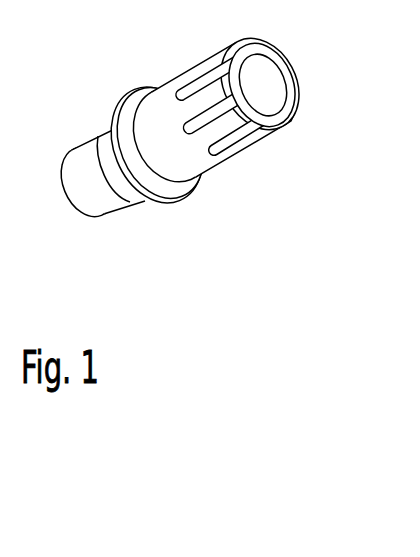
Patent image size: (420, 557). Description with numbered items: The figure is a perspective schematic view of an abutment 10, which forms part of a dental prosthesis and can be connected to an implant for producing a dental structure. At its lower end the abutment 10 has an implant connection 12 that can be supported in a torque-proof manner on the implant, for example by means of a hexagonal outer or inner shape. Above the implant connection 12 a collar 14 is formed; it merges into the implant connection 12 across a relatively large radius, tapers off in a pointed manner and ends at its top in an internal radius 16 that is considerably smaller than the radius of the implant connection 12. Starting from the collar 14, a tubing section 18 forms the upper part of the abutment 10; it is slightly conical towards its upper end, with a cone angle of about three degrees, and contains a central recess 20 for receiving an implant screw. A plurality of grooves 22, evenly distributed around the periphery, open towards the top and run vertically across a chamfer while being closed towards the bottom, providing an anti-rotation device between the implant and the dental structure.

The abutment 10 is at (78, 73).
The implant connection 12 is at (93, 193).
The collar 14 is at (173, 192).
The internal radius 16 is at (127, 107).
The tubing section 18 is at (218, 162).
The central recess 20 is at (268, 82).
The grooves 22 is at (203, 112).